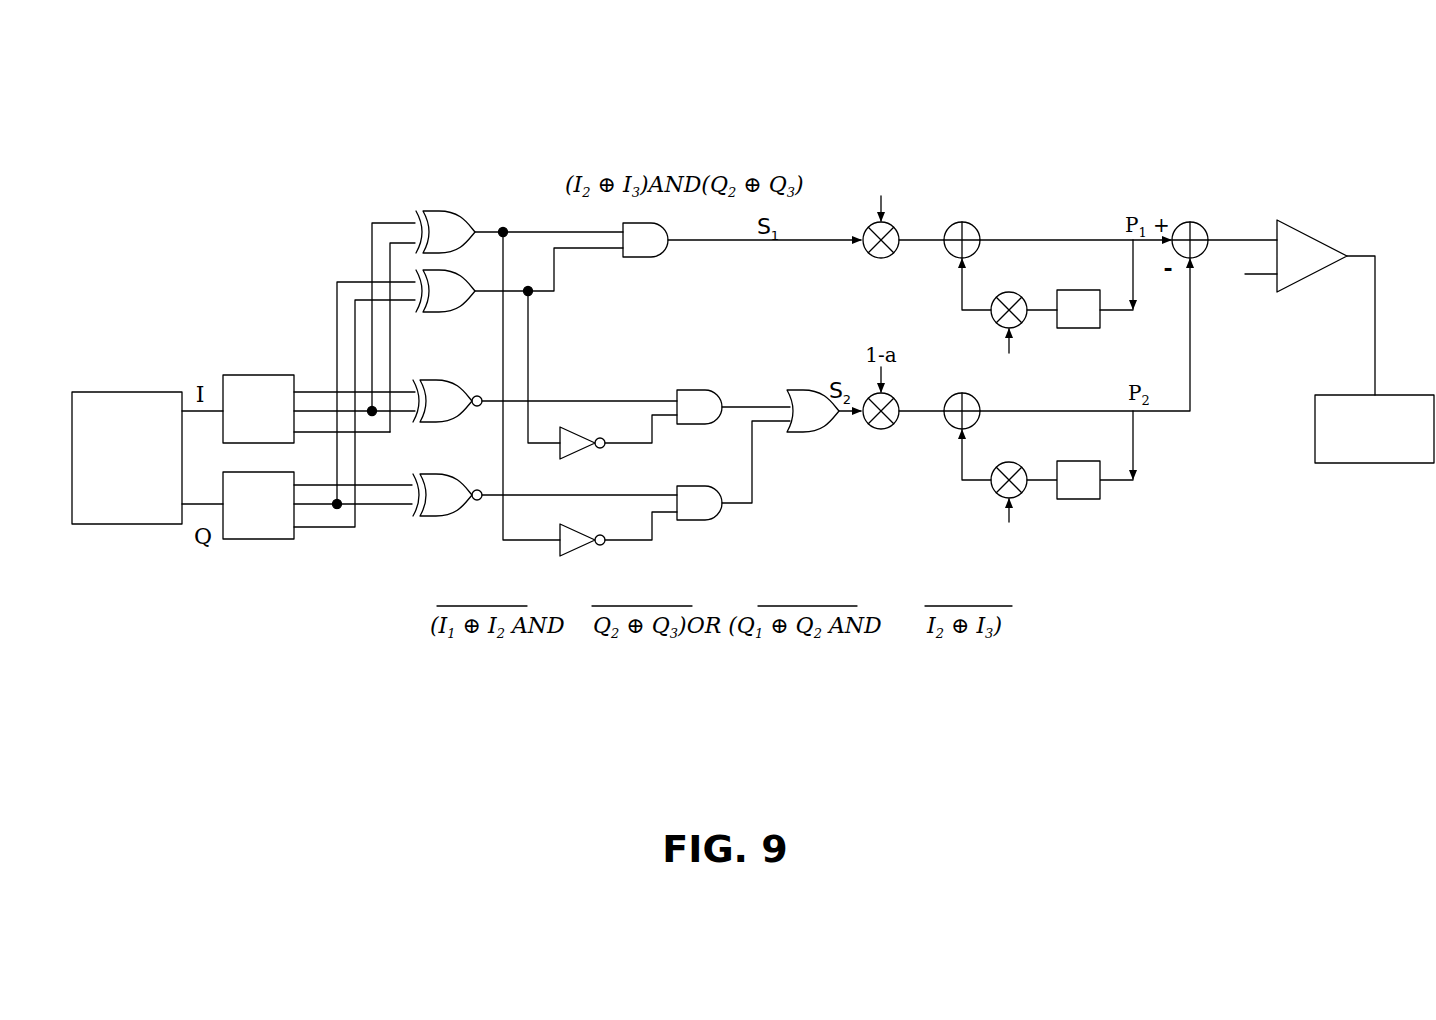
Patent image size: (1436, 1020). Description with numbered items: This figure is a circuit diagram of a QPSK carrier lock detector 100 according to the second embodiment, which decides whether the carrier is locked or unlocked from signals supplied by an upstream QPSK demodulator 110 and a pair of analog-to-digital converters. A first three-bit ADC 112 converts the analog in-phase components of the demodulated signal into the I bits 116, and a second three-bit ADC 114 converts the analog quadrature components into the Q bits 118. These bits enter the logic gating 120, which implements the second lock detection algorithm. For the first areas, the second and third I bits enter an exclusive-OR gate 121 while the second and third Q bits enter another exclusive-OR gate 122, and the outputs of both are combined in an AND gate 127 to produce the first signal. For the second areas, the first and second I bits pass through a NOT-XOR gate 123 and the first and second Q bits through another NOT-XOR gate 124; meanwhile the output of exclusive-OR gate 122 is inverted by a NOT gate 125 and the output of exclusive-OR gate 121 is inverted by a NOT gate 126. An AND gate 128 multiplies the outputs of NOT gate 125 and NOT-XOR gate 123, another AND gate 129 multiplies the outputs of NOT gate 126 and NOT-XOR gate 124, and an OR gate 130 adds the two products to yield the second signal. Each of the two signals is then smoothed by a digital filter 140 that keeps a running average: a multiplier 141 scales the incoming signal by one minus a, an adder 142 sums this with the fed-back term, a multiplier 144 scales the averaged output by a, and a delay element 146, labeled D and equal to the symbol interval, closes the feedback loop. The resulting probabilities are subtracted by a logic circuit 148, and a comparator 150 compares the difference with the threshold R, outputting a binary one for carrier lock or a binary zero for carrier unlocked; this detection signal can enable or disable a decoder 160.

The QPSK carrier lock detector 100 is at (243, 113).
The QPSK demodulator 110 is at (127, 410).
The first 3-bit ADC 112 is at (253, 385).
The second 3-bit ADC 114 is at (245, 540).
The I bits 116 is at (329, 390).
The Q bits 118 is at (354, 527).
The logic gating 120 is at (525, 193).
The exclusive-OR gate 121 is at (440, 211).
The exclusive-OR gate 122 is at (448, 312).
The NOT-XOR gate 123 is at (450, 422).
The NOT-XOR gate 124 is at (440, 516).
The NOT gate 125 is at (585, 455).
The NOT gate 126 is at (585, 556).
The AND gate 127 is at (648, 257).
The AND gate 128 is at (696, 390).
The AND gate 129 is at (705, 521).
The OR gate 130 is at (808, 432).
The digital filter 140 is at (1035, 198).
The multiplier 141 is at (863, 236).
The adder 142 is at (975, 226).
The multiplier 144 is at (1023, 488).
The delay element 146 is at (1080, 499).
The logic circuit 148 is at (1204, 228).
The comparator 150 is at (1313, 250).
The decoder 160 is at (1374, 429).